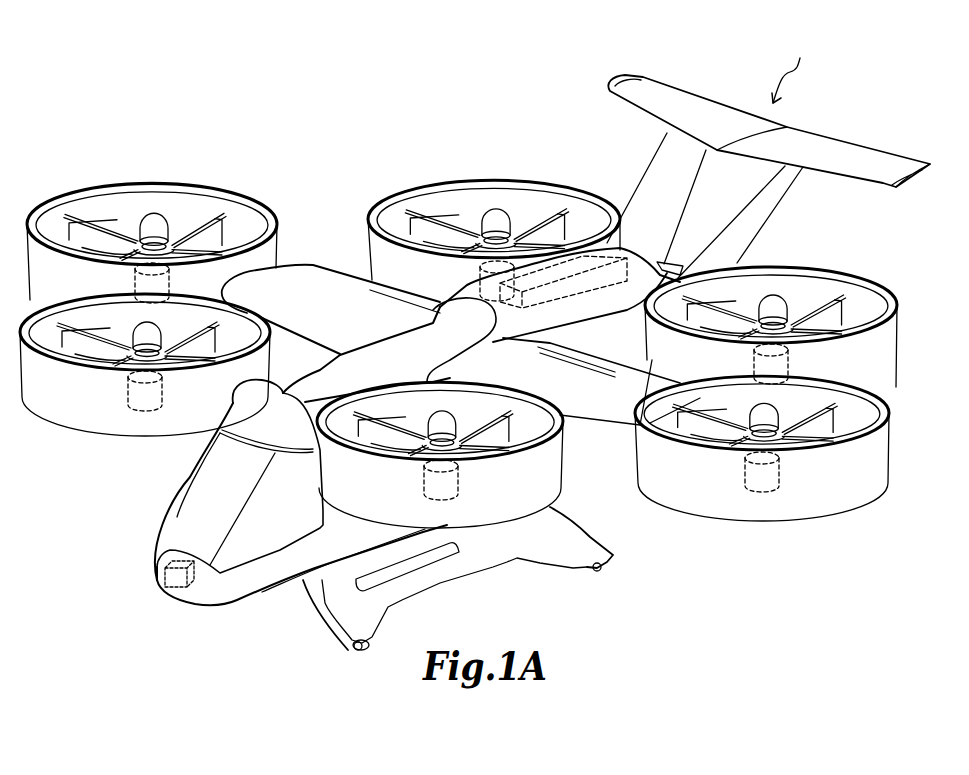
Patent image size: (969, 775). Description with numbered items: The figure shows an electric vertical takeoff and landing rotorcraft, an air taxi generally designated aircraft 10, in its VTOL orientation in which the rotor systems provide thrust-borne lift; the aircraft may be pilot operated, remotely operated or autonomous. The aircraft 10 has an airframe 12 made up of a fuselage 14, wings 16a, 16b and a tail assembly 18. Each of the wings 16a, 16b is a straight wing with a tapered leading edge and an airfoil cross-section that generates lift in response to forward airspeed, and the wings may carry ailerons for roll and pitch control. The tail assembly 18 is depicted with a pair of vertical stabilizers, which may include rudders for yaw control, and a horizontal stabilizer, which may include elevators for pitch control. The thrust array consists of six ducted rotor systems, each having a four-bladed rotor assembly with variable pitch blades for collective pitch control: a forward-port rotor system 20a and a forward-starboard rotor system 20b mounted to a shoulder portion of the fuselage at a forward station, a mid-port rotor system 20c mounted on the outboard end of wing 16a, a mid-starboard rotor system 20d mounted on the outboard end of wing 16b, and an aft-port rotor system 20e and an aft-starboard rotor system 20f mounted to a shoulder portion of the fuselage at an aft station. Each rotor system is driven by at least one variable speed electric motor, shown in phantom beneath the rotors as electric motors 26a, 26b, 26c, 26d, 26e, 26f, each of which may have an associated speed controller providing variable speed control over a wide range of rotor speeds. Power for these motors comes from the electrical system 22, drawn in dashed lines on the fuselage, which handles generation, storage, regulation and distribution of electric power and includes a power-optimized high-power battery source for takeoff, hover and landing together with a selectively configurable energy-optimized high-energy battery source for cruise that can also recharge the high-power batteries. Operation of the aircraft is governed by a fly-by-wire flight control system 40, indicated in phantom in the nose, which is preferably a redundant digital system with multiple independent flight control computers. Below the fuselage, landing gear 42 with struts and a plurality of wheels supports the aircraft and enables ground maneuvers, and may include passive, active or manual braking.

The aircraft 10 is at (795, 71).
The airframe 12 is at (232, 588).
The fuselage 14 is at (265, 573).
The wing 16a is at (613, 415).
The wing 16b is at (293, 278).
The tail assembly 18 is at (833, 152).
The forward-port rotor system 20a is at (561, 490).
The forward-starboard rotor system 20b is at (128, 436).
The mid-port rotor system 20c is at (719, 520).
The mid-starboard rotor system 20d is at (137, 195).
The aft-port rotor system 20e is at (895, 324).
The aft-starboard rotor system 20f is at (488, 190).
The electrical system 22 is at (587, 263).
The variable speed electric motor 26a is at (460, 477).
The variable speed electric motor 26b is at (128, 395).
The variable speed electric motor 26c is at (779, 483).
The variable speed electric motor 26d is at (175, 280).
The variable speed electric motor 26e is at (793, 364).
The variable speed electric motor 26f is at (478, 277).
The flight control system 40 is at (157, 590).
The landing gear 42 is at (348, 618).